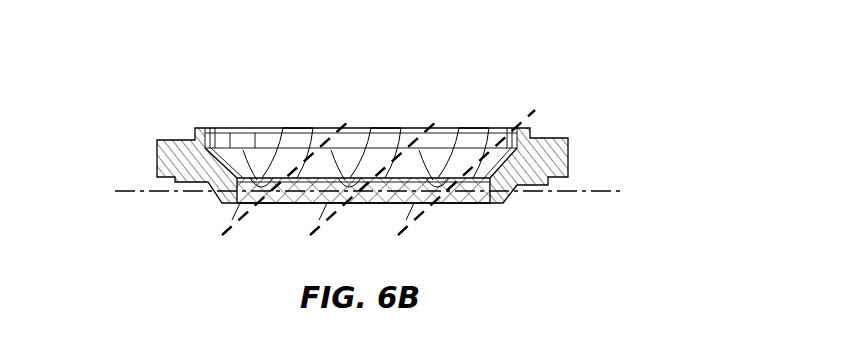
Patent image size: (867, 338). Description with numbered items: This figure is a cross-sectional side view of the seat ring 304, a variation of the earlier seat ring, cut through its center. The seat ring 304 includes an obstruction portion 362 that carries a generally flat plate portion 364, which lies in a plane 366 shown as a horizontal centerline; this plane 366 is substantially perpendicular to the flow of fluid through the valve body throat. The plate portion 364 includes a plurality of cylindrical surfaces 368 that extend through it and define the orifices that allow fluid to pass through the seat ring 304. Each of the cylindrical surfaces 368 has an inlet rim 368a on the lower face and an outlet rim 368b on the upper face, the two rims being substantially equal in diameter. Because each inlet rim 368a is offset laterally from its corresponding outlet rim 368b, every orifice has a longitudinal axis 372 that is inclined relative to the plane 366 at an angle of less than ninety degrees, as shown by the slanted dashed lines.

The seat ring 304 is at (564, 128).
The obstruction portion 362 is at (506, 216).
The plate portion 364 is at (480, 204).
The plane 366 is at (580, 191).
The cylindrical surfaces 368 is at (487, 128).
The inlet rim 368a is at (403, 222).
The outlet rim 368b is at (455, 128).
The longitudinal axis 372 is at (524, 127).